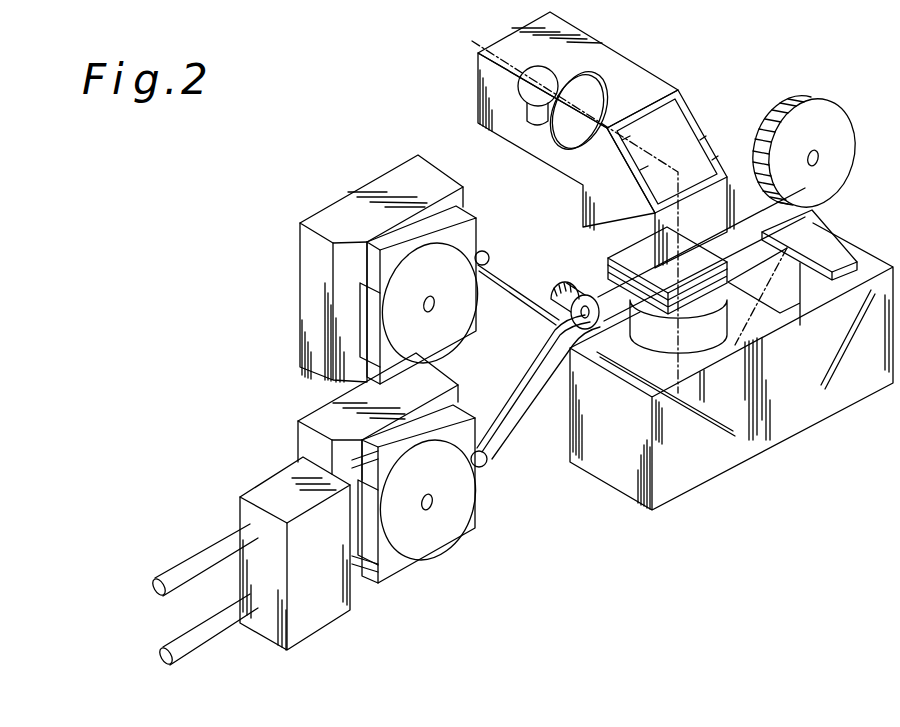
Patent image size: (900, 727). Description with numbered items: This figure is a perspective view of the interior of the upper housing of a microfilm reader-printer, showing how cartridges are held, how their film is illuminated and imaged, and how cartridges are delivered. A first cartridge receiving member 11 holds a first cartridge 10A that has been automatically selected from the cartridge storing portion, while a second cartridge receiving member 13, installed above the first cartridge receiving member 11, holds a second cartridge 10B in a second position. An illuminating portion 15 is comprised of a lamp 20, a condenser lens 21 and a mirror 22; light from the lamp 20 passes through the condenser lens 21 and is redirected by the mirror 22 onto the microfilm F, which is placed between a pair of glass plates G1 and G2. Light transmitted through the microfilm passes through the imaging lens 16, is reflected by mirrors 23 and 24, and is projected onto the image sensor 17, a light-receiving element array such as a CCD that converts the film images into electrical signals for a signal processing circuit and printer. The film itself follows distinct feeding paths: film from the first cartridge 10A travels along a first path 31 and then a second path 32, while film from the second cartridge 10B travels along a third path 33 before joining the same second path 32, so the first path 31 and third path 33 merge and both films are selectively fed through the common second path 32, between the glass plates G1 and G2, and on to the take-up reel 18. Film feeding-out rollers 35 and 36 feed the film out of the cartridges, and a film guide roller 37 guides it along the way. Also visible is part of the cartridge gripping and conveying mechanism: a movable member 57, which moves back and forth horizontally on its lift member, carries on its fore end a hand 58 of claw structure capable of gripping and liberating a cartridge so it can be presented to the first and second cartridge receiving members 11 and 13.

The illuminating portion 15 is at (675, 71).
The lamp 20 is at (480, 46).
The condenser lens 21 is at (598, 88).
The mirror 22 is at (687, 132).
The take-up reel 18 is at (838, 123).
The microfilm F is at (752, 222).
The image sensor 17 is at (827, 253).
The glass plate G1 is at (607, 265).
The glass plate G2 is at (633, 272).
The imaging lens 16 is at (693, 343).
The second path 32 is at (607, 305).
The mirror 24 is at (847, 325).
The mirror 23 is at (717, 427).
The second cartridge receiving member 13 is at (438, 190).
The second cartridge 10B is at (450, 225).
The film feeding-out roller 36 is at (478, 257).
The third path 33 is at (510, 300).
The film guide roller 37 is at (557, 298).
The first path 31 is at (527, 403).
The film feeding-out roller 35 is at (481, 462).
The first cartridge 10A is at (468, 527).
The first cartridge receiving member 11 is at (330, 417).
The hand 58 is at (363, 570).
The movable member 57 is at (330, 607).